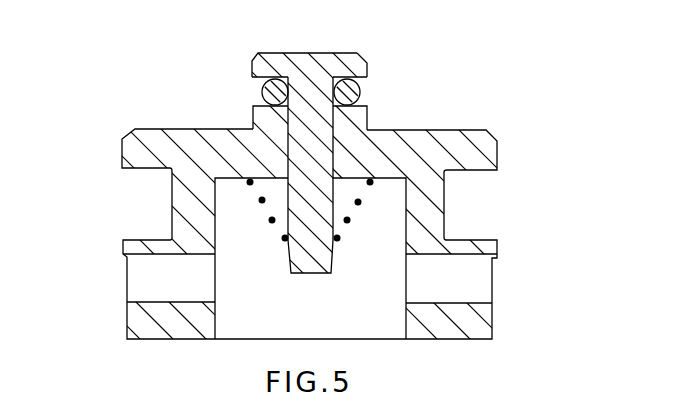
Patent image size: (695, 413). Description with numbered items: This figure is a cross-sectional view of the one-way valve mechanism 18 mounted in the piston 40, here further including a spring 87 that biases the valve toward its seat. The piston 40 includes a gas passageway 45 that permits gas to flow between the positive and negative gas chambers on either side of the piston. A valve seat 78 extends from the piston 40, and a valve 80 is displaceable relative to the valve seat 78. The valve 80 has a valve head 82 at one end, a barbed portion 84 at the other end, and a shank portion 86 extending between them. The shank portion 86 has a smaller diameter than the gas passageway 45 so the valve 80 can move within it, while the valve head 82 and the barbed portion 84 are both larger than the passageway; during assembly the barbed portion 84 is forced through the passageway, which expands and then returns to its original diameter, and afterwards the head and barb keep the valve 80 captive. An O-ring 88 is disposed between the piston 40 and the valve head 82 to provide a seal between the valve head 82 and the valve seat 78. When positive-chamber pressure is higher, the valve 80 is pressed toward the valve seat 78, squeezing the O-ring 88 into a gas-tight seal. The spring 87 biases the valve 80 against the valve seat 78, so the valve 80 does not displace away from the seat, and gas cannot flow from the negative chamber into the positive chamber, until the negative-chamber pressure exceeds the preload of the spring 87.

The one-way valve mechanism 18 is at (379, 47).
The piston 40 is at (182, 152).
The gas passageway 45 is at (287, 177).
The valve seat 78 is at (270, 118).
The valve 80 is at (250, 68).
The valve head 82 is at (366, 66).
The barbed portion 84 is at (307, 260).
The shank portion 86 is at (307, 162).
The spring 87 is at (362, 203).
The O-ring 88 is at (361, 90).